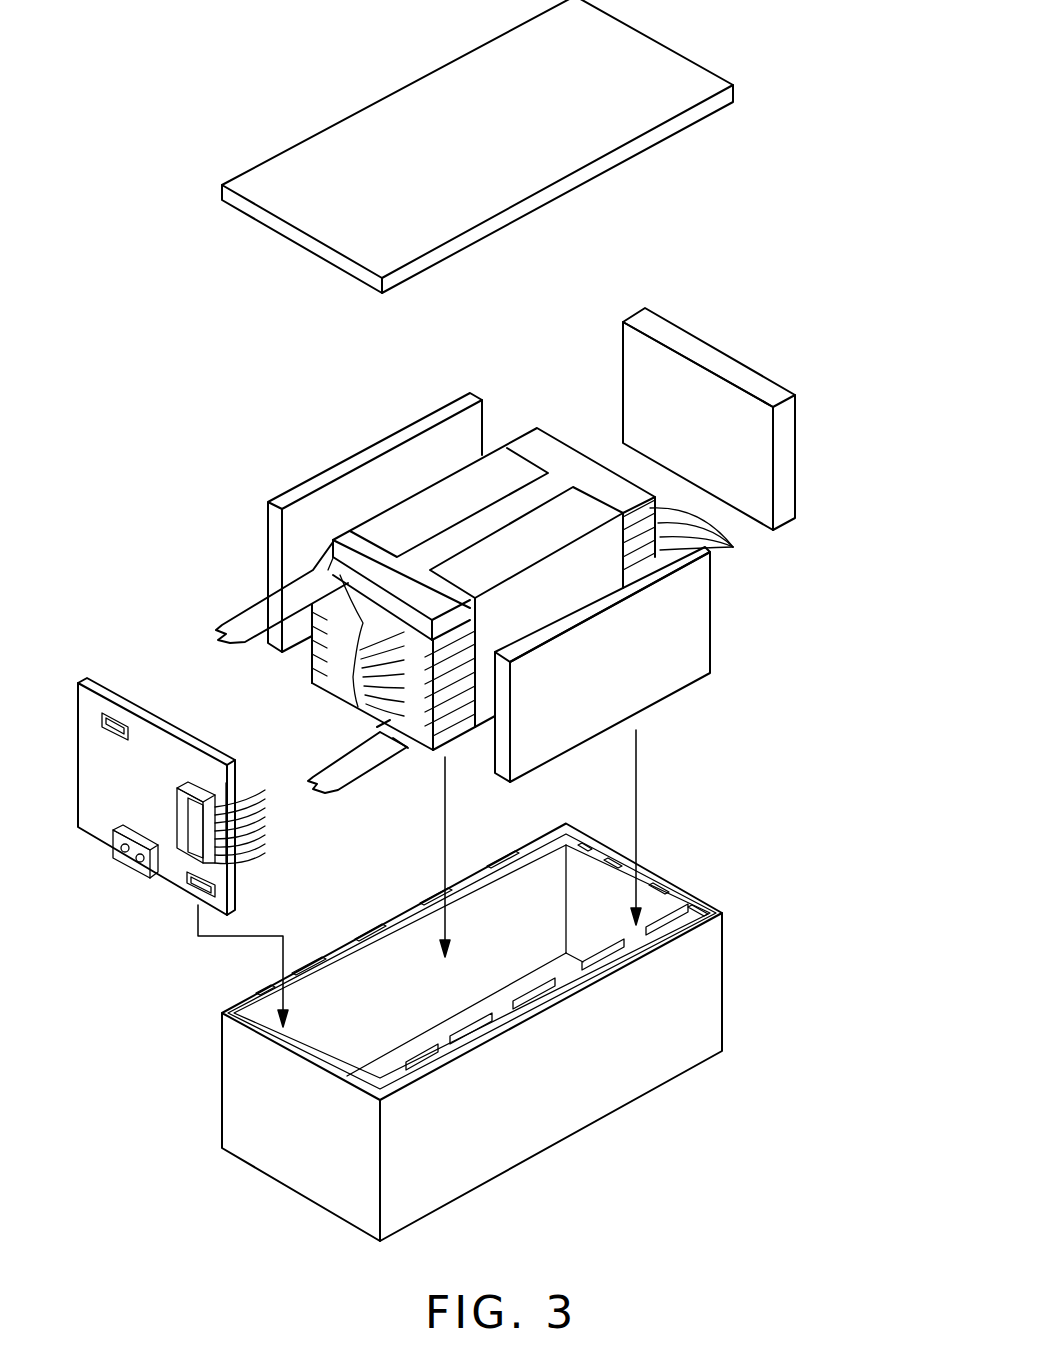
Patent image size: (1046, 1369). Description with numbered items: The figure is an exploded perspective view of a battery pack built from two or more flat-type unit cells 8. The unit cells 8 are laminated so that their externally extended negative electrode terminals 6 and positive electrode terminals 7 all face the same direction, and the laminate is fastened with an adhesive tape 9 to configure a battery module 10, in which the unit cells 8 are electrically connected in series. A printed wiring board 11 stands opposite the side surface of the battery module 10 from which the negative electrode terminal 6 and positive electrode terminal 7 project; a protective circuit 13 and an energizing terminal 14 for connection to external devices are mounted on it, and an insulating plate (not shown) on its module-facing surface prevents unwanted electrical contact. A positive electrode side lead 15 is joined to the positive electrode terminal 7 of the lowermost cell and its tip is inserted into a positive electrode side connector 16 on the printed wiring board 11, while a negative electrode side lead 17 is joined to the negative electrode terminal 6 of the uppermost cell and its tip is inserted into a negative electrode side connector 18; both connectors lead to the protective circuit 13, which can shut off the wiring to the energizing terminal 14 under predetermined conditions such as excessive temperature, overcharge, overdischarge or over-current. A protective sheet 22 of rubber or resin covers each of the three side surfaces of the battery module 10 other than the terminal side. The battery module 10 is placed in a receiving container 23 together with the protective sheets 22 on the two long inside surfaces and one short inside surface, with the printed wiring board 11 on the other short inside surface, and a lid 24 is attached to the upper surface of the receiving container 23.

The negative electrode terminal 6 is at (328, 570).
The positive electrode terminal 7 is at (420, 628).
The unit cell 8 is at (733, 547).
The adhesive tape 9 is at (563, 517).
The battery module 10 is at (423, 493).
The printed wiring board 11 is at (113, 682).
The protective circuit 13 is at (192, 785).
The energizing terminal 14 is at (142, 865).
The positive electrode side lead 15 is at (357, 772).
The positive electrode side connector 16 is at (228, 889).
The negative electrode side lead 17 is at (230, 618).
The negative electrode side connector 18 is at (122, 725).
The protective sheet 22 is at (337, 475).
The receiving container 23 is at (711, 992).
The lid 24 is at (672, 72).